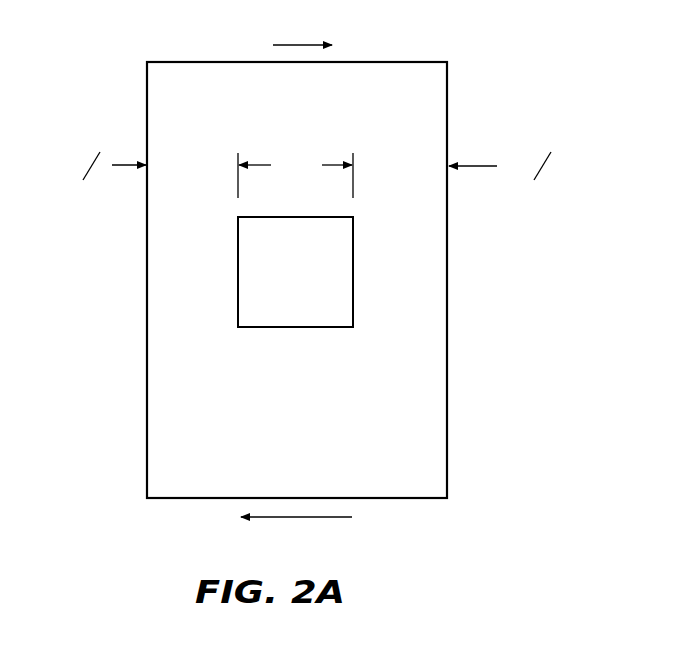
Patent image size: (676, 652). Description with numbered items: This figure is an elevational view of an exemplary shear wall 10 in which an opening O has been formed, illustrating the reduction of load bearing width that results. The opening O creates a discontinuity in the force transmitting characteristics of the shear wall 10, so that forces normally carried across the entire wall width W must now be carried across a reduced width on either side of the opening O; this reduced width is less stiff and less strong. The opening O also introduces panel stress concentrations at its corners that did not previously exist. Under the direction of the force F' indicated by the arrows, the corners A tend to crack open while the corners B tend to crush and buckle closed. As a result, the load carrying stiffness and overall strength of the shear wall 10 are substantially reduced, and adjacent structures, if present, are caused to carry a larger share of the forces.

The shear wall 10 is at (404, 82).
The opening O is at (218, 272).
The corners A is at (293, 275).
The corners B is at (263, 274).
The wall width W is at (304, 168).
The force F' F is at (296, 283).